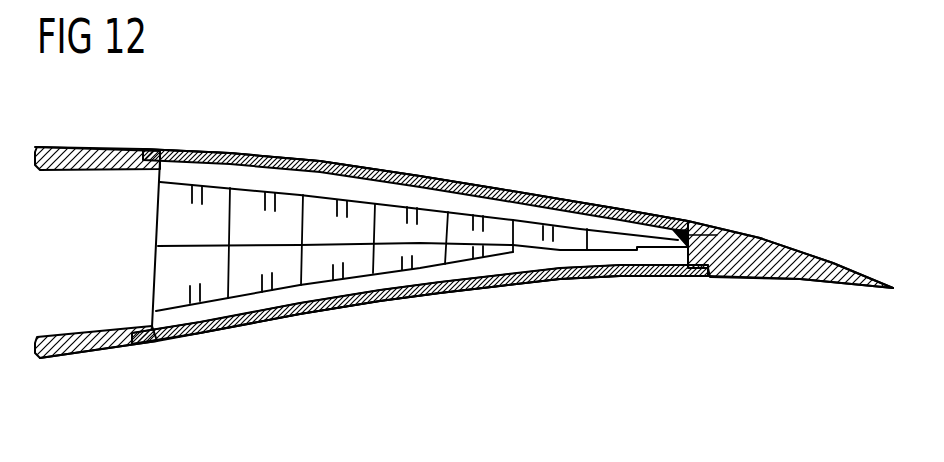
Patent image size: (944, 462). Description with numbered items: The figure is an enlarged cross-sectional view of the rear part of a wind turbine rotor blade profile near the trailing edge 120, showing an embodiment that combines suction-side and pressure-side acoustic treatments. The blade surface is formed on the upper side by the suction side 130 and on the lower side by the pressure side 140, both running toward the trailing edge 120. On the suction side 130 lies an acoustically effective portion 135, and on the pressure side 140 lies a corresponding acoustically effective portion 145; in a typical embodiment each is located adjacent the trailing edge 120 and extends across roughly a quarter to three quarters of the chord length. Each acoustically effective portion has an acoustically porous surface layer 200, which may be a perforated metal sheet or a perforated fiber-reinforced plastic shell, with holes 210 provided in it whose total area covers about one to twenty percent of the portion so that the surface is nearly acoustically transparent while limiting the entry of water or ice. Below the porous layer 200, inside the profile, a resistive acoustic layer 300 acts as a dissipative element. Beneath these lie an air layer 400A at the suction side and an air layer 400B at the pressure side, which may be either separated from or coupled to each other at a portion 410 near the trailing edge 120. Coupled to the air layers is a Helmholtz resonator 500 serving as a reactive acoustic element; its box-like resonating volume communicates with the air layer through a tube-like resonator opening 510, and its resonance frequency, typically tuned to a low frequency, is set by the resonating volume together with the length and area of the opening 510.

The trailing edge 120 is at (757, 247).
The suction side 130 is at (107, 148).
The acoustically effective portion 135 is at (680, 75).
The pressure side 140 is at (77, 356).
The acoustically effective portion 145 is at (680, 378).
The acoustically porous surface layer 200 is at (420, 244).
The holes 210 is at (452, 165).
The resistive acoustic layer 300 is at (542, 265).
The air layer 400A is at (192, 173).
The air layer 400B is at (180, 316).
The portion near the trailing edge 410 is at (678, 232).
The Helmholtz resonator 500 is at (385, 220).
The resonator opening 510 is at (273, 188).